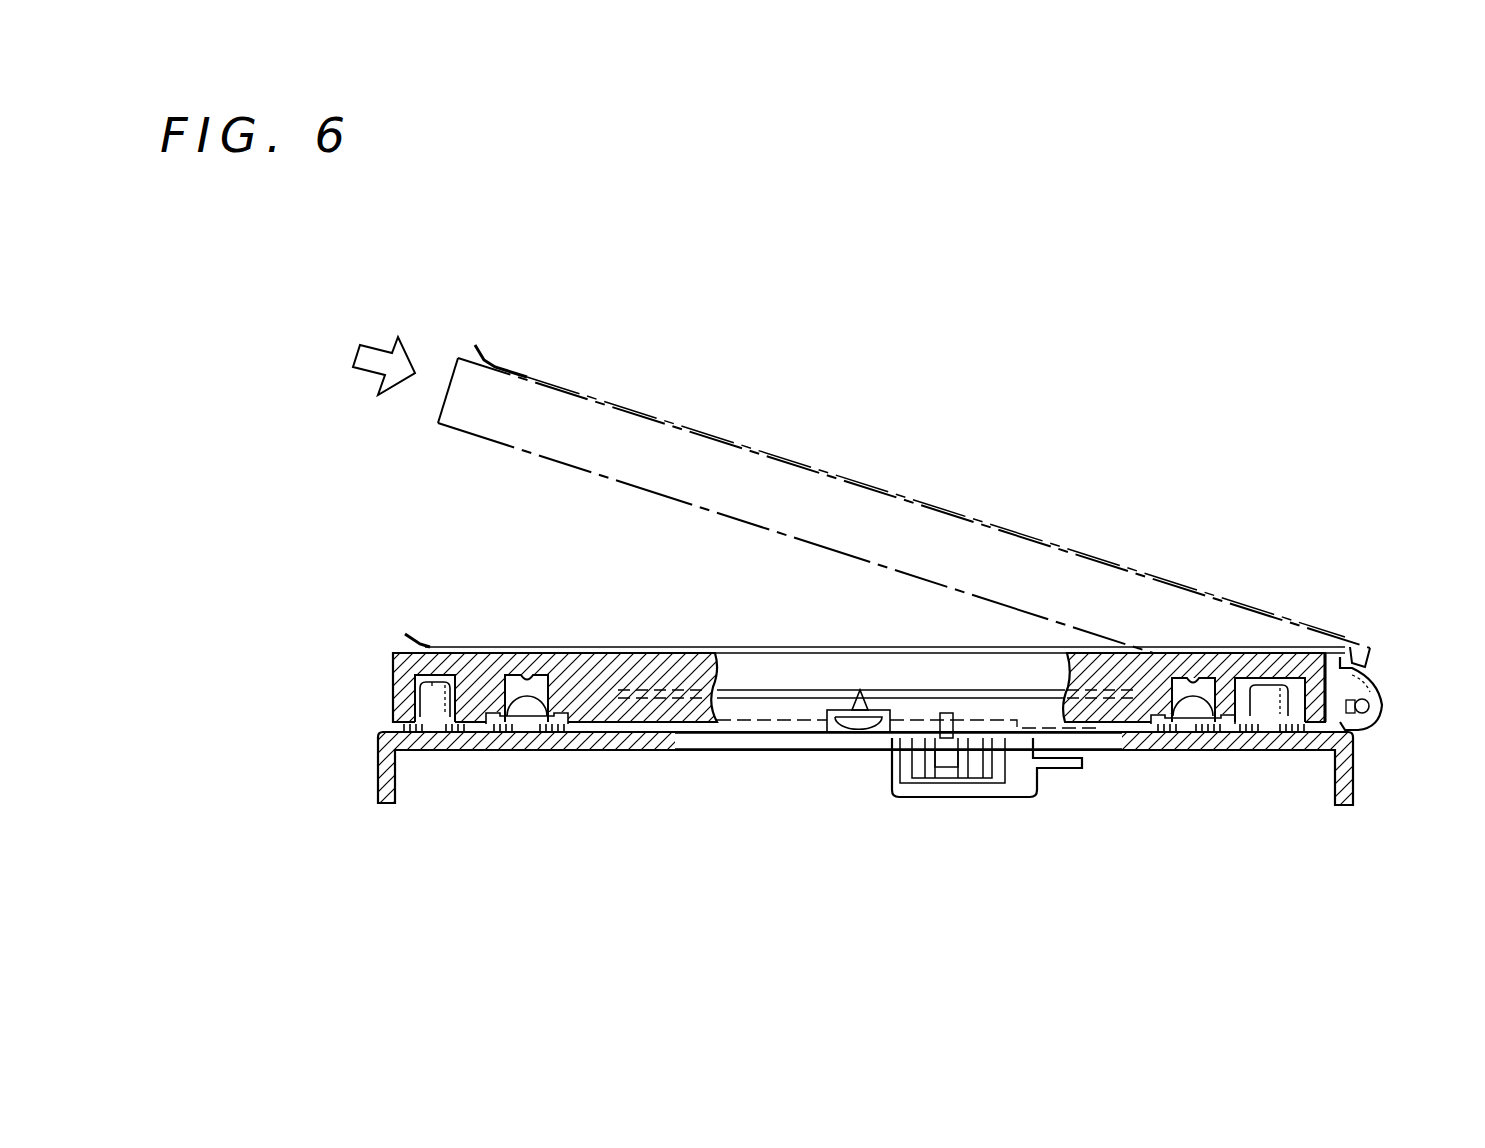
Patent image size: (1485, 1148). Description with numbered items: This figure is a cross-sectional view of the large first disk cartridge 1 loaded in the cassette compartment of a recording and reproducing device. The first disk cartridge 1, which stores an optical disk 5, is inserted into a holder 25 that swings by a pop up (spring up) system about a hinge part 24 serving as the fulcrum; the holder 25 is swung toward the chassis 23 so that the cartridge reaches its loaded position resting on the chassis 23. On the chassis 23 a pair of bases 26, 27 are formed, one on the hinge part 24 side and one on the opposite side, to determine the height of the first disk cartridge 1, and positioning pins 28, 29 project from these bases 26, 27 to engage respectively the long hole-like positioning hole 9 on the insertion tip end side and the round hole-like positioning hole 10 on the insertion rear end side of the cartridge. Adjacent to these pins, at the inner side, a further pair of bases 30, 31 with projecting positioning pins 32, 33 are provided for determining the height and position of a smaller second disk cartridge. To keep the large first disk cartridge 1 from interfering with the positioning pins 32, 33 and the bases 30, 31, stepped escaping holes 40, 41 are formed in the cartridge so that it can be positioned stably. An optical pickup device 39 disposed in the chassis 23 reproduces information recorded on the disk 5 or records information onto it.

The first disk cartridge 1 is at (637, 655).
The holder 25 is at (758, 645).
The disk 5 is at (810, 690).
The positioning hole 10 is at (440, 672).
The stepped escaping hole 41 is at (534, 672).
The stepped escaping hole 40 is at (1195, 676).
The positioning hole 9 is at (1283, 680).
The hinge part 24 is at (1378, 705).
The chassis 23 is at (632, 753).
The optical pickup device 39 is at (850, 735).
The base 27 is at (410, 727).
The positioning pin 29 is at (448, 730).
The base 31 is at (510, 730).
The positioning pin 33 is at (545, 732).
The base 30 is at (1168, 725).
The positioning pin 32 is at (1195, 733).
The base 26 is at (1253, 725).
The positioning pin 28 is at (1275, 733).